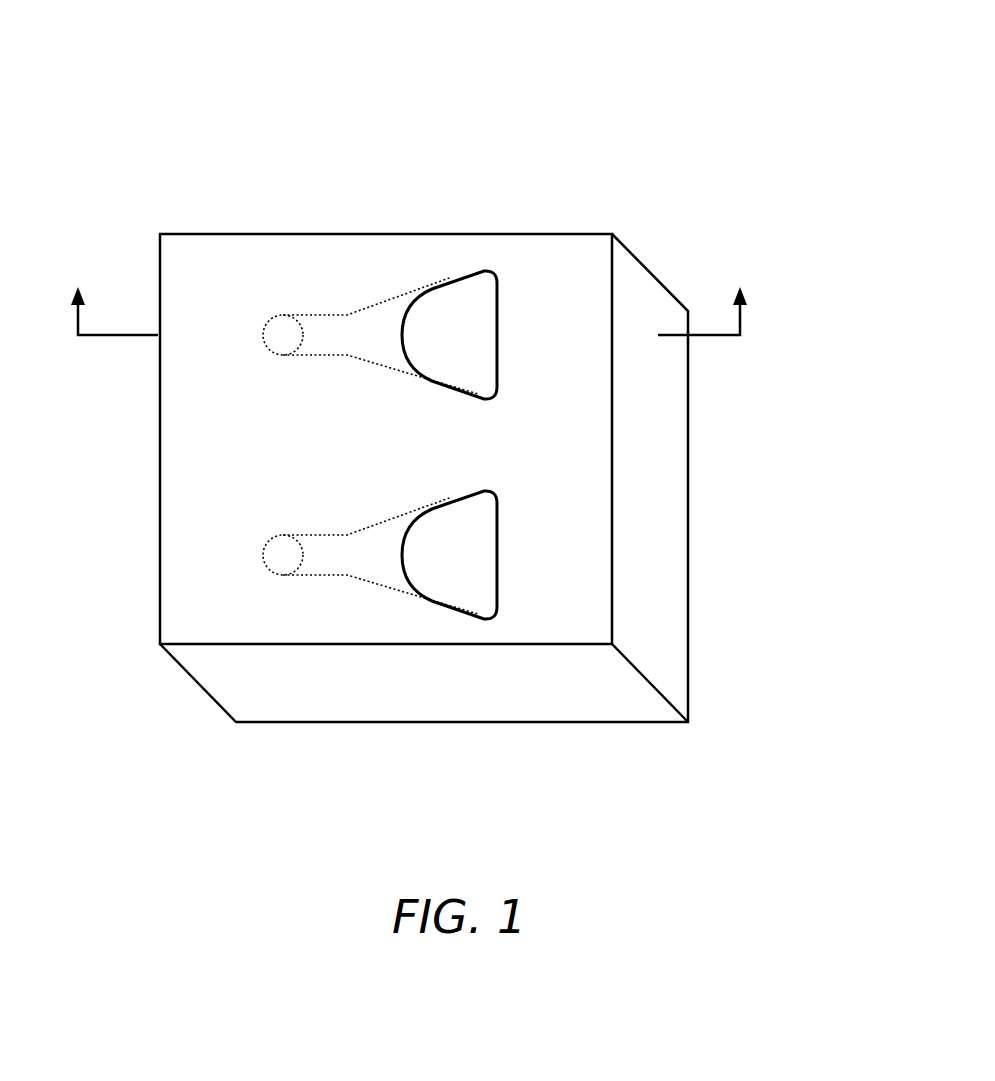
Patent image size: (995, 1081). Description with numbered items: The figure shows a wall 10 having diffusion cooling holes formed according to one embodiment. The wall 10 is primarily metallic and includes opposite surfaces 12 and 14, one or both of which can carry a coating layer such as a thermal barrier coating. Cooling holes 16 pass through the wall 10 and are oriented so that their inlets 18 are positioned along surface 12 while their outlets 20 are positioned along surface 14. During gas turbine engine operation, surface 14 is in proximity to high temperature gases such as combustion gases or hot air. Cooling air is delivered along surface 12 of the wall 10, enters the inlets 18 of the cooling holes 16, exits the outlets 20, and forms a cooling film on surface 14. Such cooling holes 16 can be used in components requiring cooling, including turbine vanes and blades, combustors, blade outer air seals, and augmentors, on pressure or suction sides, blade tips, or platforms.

The wall 10 is at (515, 180).
The surface 12 is at (372, 722).
The surface 14 is at (243, 304).
The cooling holes 16 is at (478, 330).
The inlets 18 is at (282, 340).
The outlets 20 is at (458, 352).